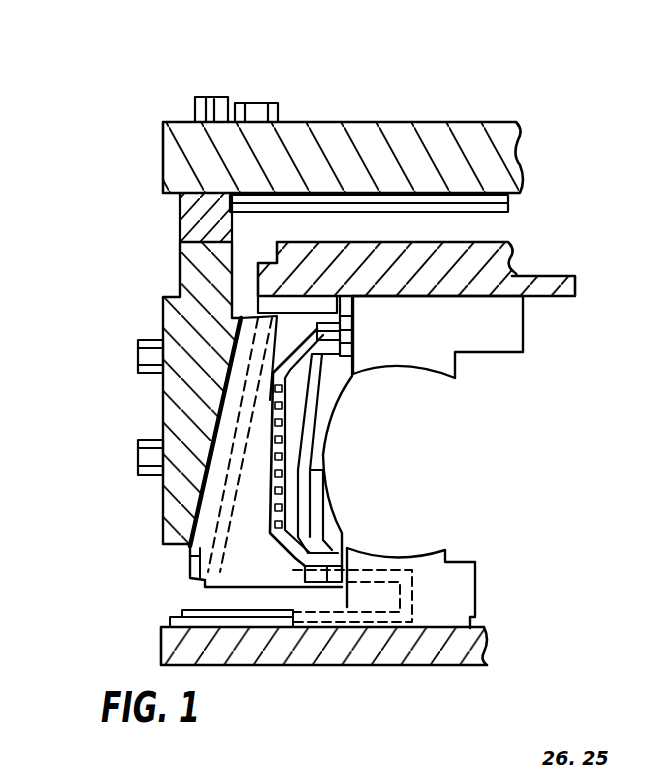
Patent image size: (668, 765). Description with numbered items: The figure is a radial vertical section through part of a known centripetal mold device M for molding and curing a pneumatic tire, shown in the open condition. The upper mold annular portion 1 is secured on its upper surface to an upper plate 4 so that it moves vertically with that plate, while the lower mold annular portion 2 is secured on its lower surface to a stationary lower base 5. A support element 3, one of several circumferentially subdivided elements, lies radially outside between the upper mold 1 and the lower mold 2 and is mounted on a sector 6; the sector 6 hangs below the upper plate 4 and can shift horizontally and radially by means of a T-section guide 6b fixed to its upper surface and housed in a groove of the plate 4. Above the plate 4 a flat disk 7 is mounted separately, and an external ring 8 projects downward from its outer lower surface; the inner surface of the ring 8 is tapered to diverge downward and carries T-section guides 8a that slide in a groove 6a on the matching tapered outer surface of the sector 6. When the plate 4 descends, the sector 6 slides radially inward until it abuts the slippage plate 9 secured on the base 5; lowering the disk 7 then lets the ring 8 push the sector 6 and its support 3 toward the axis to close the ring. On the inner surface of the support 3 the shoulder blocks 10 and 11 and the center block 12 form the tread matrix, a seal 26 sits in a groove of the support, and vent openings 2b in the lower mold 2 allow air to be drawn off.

The upper mold annular portion 1 is at (523, 343).
The lower mold annular portion 2 is at (458, 588).
The vent openings 2b is at (398, 560).
The support element 3 is at (306, 470).
The upper plate 4 is at (514, 274).
The lower base 5 is at (170, 634).
The sector 6 is at (200, 585).
The groove 6a is at (186, 562).
The guide 6b is at (234, 304).
The flat disk 7 is at (446, 150).
The external ring 8 is at (163, 394).
The guide 8a is at (216, 462).
The slippage plate 9 is at (182, 609).
The shoulder block 10 is at (333, 402).
The shoulder block 11 is at (324, 518).
The center block 12 is at (326, 456).
The seal 26 is at (353, 344).
The device M is at (550, 220).